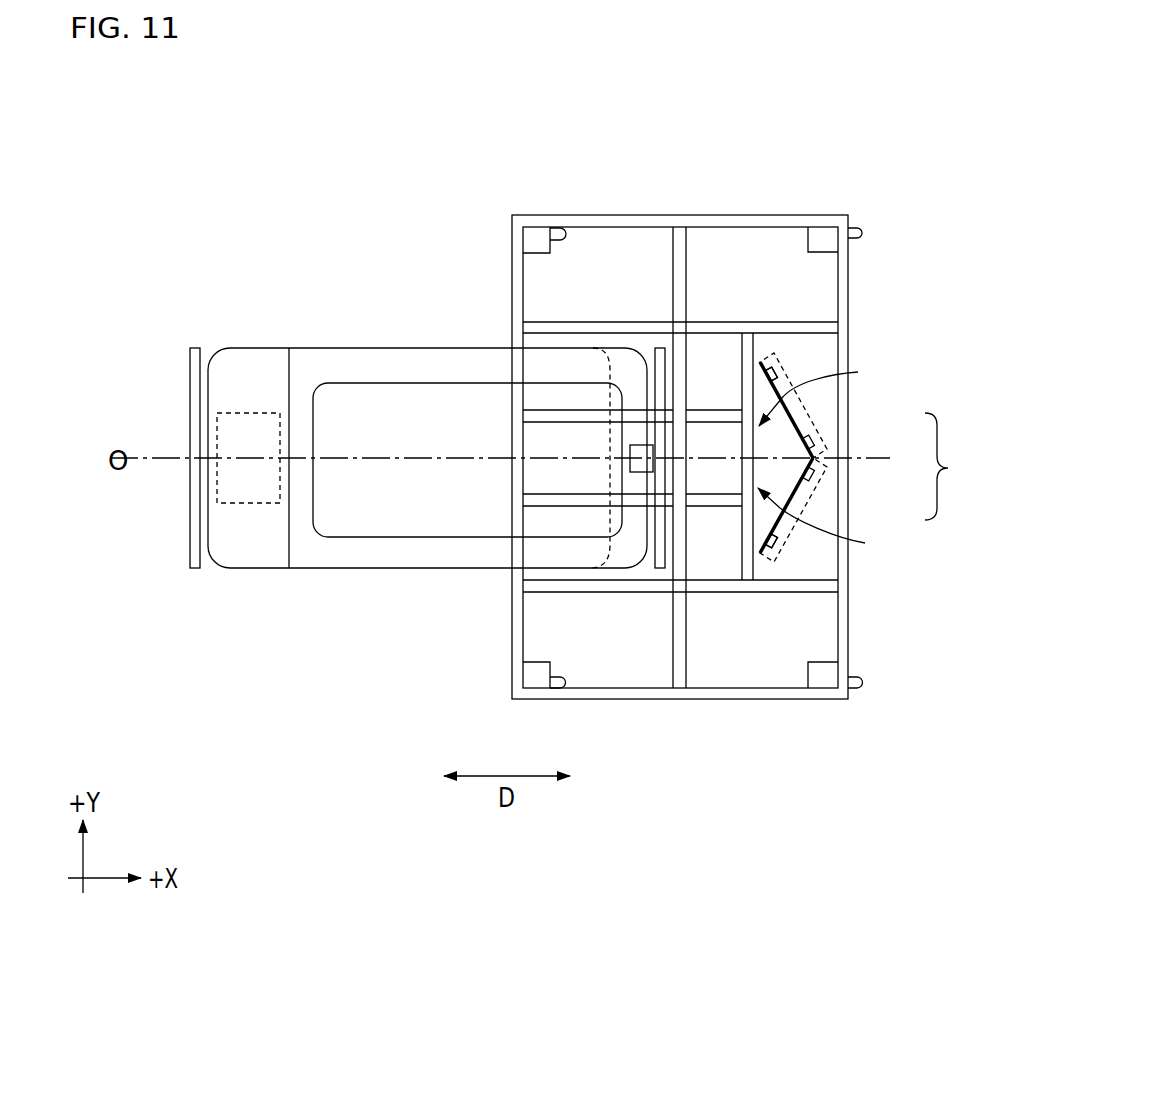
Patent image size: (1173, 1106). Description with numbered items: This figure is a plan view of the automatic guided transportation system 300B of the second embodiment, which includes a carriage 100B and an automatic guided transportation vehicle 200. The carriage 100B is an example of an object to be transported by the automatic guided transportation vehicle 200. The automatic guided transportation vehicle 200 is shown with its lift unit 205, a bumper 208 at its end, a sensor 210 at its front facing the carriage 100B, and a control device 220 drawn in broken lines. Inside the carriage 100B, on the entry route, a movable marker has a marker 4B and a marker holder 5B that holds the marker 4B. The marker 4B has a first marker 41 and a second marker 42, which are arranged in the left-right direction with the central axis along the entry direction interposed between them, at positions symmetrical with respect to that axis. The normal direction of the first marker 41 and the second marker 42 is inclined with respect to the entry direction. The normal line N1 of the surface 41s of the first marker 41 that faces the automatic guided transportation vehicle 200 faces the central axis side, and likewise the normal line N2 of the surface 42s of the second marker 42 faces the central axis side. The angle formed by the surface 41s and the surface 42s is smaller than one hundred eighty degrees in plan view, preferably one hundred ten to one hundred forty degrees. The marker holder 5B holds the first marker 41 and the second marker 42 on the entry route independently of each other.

The automatic guided transportation system 300B is at (397, 150).
The carriage 100B is at (687, 187).
The automatic guided transportation vehicle 200 is at (318, 325).
The lift unit 205 is at (410, 523).
The bumper 208 is at (190, 550).
The sensor 210 is at (645, 445).
The control device 220 is at (257, 503).
The marker 4B is at (956, 466).
The first marker 41 is at (797, 503).
The second marker 42 is at (797, 415).
The surface of the first marker 41s is at (766, 541).
The surface of the second marker 42s is at (768, 374).
The marker holder 5B is at (777, 373).
The normal line of the surface of the first marker N1 is at (825, 526).
The normal line of the surface of the second marker N2 is at (823, 391).